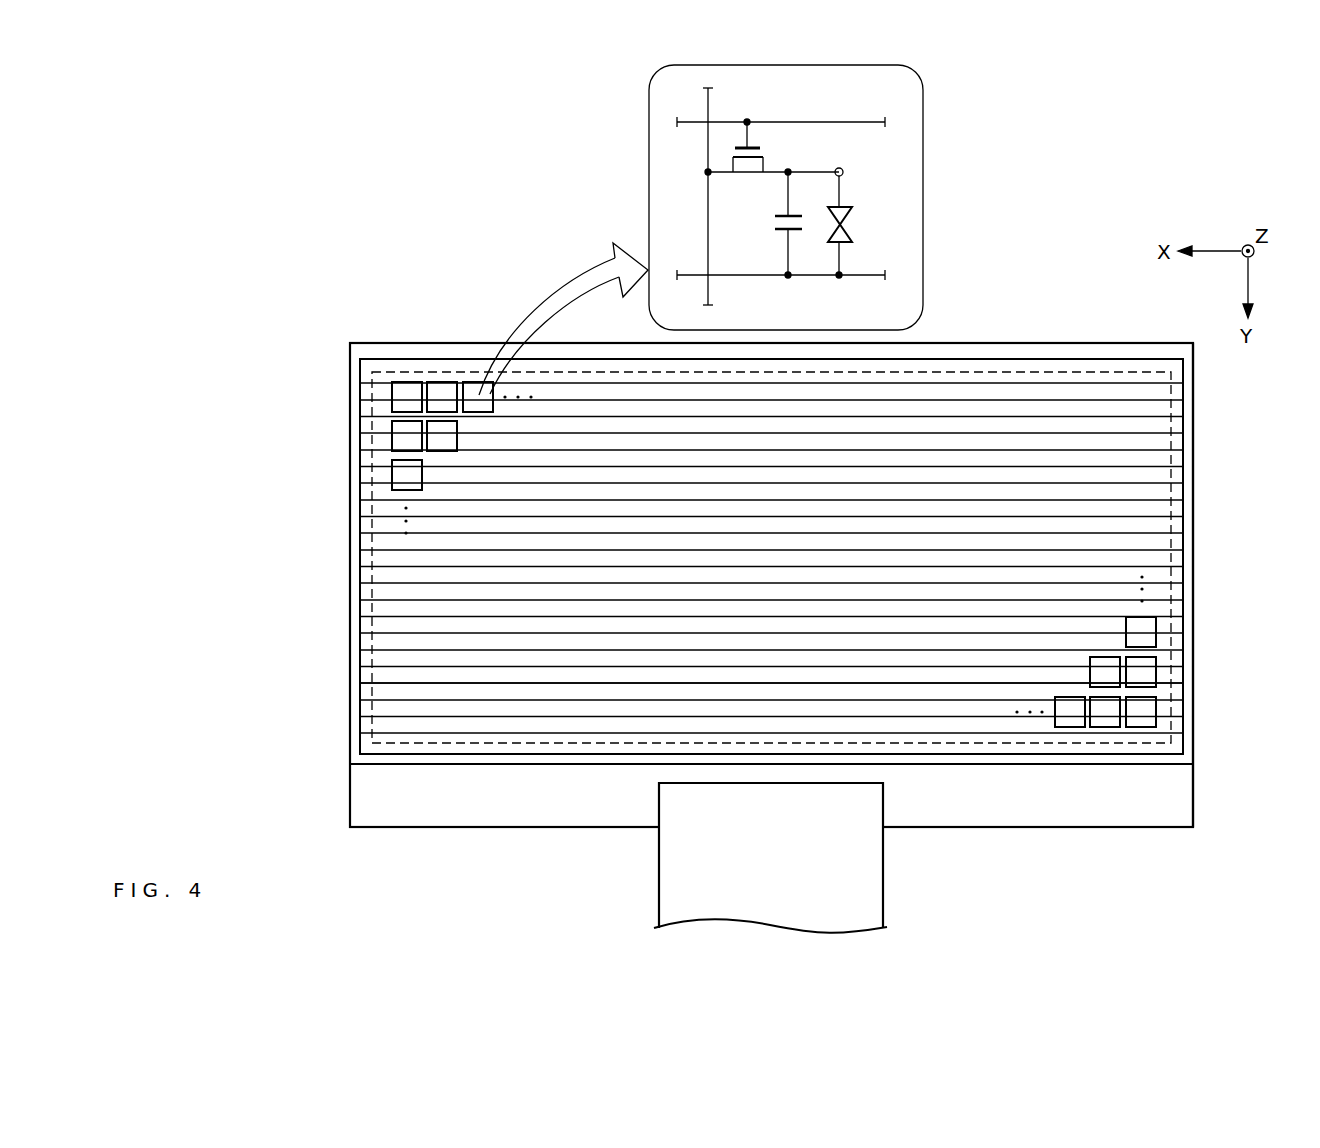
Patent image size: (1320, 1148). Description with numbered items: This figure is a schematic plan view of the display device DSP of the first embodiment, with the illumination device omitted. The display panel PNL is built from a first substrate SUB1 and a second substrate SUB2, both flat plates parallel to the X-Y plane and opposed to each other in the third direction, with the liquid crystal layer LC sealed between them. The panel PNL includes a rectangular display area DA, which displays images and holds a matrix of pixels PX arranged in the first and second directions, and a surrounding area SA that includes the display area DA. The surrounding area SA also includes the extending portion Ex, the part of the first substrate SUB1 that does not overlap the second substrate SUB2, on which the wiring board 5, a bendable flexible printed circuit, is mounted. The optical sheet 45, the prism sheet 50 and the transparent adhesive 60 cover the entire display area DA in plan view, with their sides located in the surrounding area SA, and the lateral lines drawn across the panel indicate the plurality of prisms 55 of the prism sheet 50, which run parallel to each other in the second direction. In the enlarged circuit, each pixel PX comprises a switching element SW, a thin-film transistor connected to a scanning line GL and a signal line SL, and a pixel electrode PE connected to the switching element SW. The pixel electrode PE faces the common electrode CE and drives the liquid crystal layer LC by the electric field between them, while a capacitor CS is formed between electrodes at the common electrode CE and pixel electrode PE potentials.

The display device DSP is at (356, 287).
The display panel PNL is at (446, 333).
The display area DA is at (1183, 405).
The surrounding area SA is at (1208, 506).
The pixel PX is at (440, 451).
The prisms 55 is at (393, 617).
The optical sheet 45 is at (713, 690).
The prism sheet 50 is at (713, 690).
The adhesive 60 is at (388, 692).
The extending portion Ex is at (355, 795).
The first substrate SUB1 is at (1188, 805).
The second substrate SUB2 is at (1190, 757).
The wiring board 5 is at (873, 886).
The scanning line GL is at (690, 121).
The signal line SL is at (706, 206).
The switching element SW is at (778, 157).
The pixel electrode PE is at (844, 172).
The capacitor CS is at (766, 226).
The liquid crystal layer LC is at (860, 220).
The common electrode CE is at (858, 278).